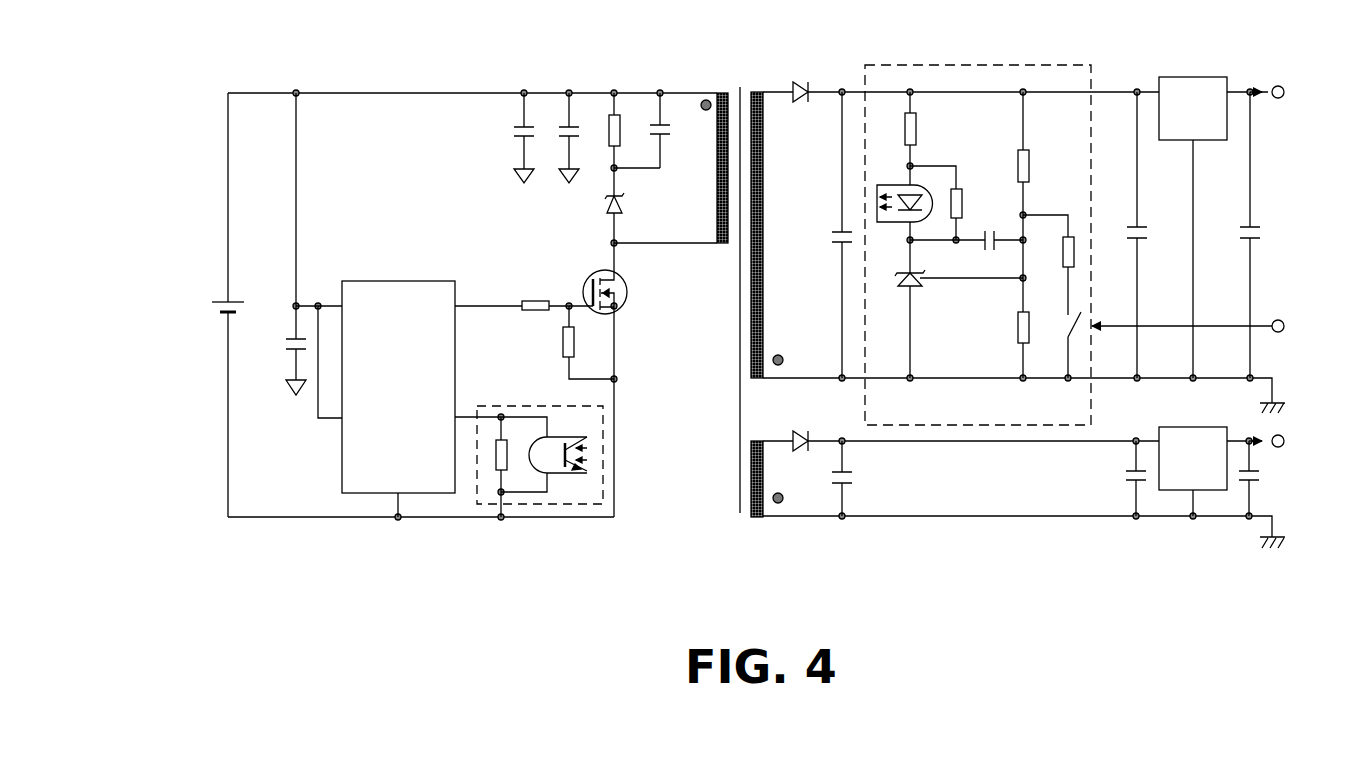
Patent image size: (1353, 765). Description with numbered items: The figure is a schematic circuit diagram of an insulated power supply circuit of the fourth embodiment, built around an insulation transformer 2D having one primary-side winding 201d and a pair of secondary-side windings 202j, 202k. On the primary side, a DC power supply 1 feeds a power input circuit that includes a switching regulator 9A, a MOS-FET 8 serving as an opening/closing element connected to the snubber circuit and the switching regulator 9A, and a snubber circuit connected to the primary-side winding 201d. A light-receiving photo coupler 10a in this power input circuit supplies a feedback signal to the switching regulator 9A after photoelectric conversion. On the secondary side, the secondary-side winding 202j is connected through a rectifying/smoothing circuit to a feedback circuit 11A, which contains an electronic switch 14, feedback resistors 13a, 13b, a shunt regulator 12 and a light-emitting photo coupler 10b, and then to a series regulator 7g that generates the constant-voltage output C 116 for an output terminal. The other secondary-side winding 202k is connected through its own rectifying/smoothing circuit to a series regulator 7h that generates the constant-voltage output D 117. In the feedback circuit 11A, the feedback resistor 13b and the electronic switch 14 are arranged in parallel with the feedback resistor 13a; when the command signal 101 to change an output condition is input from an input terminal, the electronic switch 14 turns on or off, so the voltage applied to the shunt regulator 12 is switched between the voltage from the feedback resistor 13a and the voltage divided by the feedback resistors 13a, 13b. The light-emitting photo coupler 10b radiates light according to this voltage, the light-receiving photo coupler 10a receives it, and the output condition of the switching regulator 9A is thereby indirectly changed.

The DC power supply 1 is at (220, 299).
The switching regulator 9A is at (366, 281).
The MOS-FET 8 is at (589, 282).
The light-receiving photo coupler 10a is at (516, 406).
The primary-side winding 201d is at (719, 180).
The insulation transformer 2D is at (737, 76).
The secondary-side winding 202j is at (763, 130).
The secondary-side winding 202k is at (752, 520).
The light-emitting photo coupler 10b is at (890, 185).
The feedback circuit 11A is at (960, 65).
The shunt regulator 12 is at (919, 290).
The feedback resistor 13a is at (1017, 327).
The feedback resistor 13b is at (1068, 236).
The electronic switch 14 is at (1081, 338).
The series regulator 7g is at (1190, 77).
The series regulator 7h is at (1180, 427).
The output C 116 is at (1252, 88).
The output D 117 is at (1249, 438).
The command signal 101 is at (1262, 326).